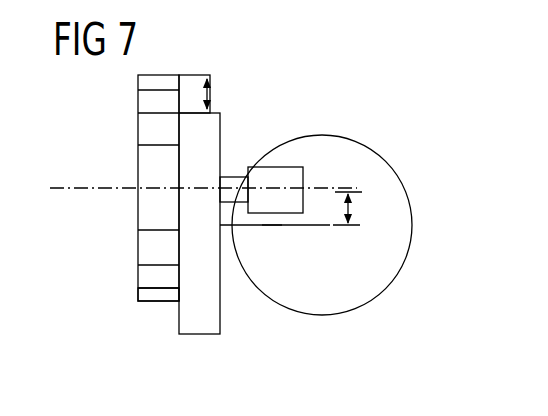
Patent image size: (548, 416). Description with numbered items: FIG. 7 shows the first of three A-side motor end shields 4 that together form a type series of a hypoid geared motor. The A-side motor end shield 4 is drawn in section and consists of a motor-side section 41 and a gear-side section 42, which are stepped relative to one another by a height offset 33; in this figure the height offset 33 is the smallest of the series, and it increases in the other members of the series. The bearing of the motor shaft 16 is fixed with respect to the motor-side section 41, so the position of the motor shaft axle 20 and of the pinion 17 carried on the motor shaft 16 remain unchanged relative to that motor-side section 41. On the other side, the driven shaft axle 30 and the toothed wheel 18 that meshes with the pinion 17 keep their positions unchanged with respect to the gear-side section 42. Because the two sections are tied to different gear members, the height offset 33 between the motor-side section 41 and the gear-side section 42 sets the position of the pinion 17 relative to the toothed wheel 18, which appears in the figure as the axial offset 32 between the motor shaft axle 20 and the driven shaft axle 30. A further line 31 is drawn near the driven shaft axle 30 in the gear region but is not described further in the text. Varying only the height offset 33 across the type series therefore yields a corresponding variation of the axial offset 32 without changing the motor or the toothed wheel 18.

The A-side motor end shield 4 is at (171, 318).
The motor shaft 16 is at (232, 176).
The pinion 17 is at (264, 166).
The toothed wheel 18 is at (325, 135).
The motor shaft axle 20 is at (64, 186).
The driven shaft axle 30 is at (327, 226).
The reference line 31 is at (272, 223).
The axial offset 32 is at (352, 209).
The height offset 33 is at (210, 93).
The motor-side section 41 is at (156, 298).
The gear-side section 42 is at (196, 332).